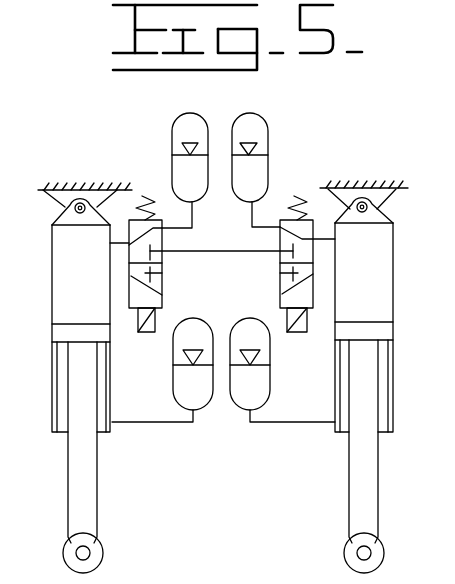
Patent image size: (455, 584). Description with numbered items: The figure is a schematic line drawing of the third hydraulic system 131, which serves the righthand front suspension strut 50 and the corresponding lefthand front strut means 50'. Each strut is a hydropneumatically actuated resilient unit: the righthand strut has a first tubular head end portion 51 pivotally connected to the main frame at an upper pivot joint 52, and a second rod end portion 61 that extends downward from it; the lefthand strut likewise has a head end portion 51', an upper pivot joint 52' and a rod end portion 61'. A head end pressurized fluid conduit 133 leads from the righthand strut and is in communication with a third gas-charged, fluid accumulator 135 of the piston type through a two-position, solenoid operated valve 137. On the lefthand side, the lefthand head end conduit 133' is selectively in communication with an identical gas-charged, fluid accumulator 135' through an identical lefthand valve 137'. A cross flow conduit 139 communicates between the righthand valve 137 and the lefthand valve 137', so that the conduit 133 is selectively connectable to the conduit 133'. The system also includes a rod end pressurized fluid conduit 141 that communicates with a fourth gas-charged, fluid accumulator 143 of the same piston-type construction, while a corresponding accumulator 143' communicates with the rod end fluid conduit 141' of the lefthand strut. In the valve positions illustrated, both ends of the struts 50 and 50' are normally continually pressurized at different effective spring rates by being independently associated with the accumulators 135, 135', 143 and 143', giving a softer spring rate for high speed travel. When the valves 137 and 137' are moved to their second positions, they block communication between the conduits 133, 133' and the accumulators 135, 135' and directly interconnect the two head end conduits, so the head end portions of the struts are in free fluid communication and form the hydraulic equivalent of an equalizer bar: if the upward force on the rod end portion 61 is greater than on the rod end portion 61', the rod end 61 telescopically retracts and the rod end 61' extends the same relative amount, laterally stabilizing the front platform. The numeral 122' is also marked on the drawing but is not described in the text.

The front suspension strut 50 is at (88, 366).
The lefthand front strut means 50' is at (385, 377).
The first tubular head end portion 51 is at (68, 328).
The head end portion 51' is at (391, 327).
The upper pivot joint 52 is at (85, 192).
The upper pivot joint 52' is at (382, 202).
The second rod end portion 61 is at (106, 457).
The lefthand rod end portion 61' is at (390, 456).
The frame member 122' is at (437, 340).
The third hydraulic system 131 is at (258, 213).
The head end pressurized fluid conduit 133 is at (112, 252).
The lefthand head end conduit 133' is at (337, 252).
The third gas-charged fluid accumulator 135 is at (152, 170).
The gas-charged fluid accumulator 135' is at (296, 155).
The two-position solenoid operated valve 137 is at (189, 294).
The lefthand valve 137' is at (250, 299).
The cross flow conduit 139 is at (197, 250).
The rod end pressurized fluid conduit 141 is at (152, 436).
The rod end fluid conduit 141' is at (292, 434).
The fourth gas-charged fluid accumulator 143 is at (164, 364).
The accumulator 143' is at (283, 364).